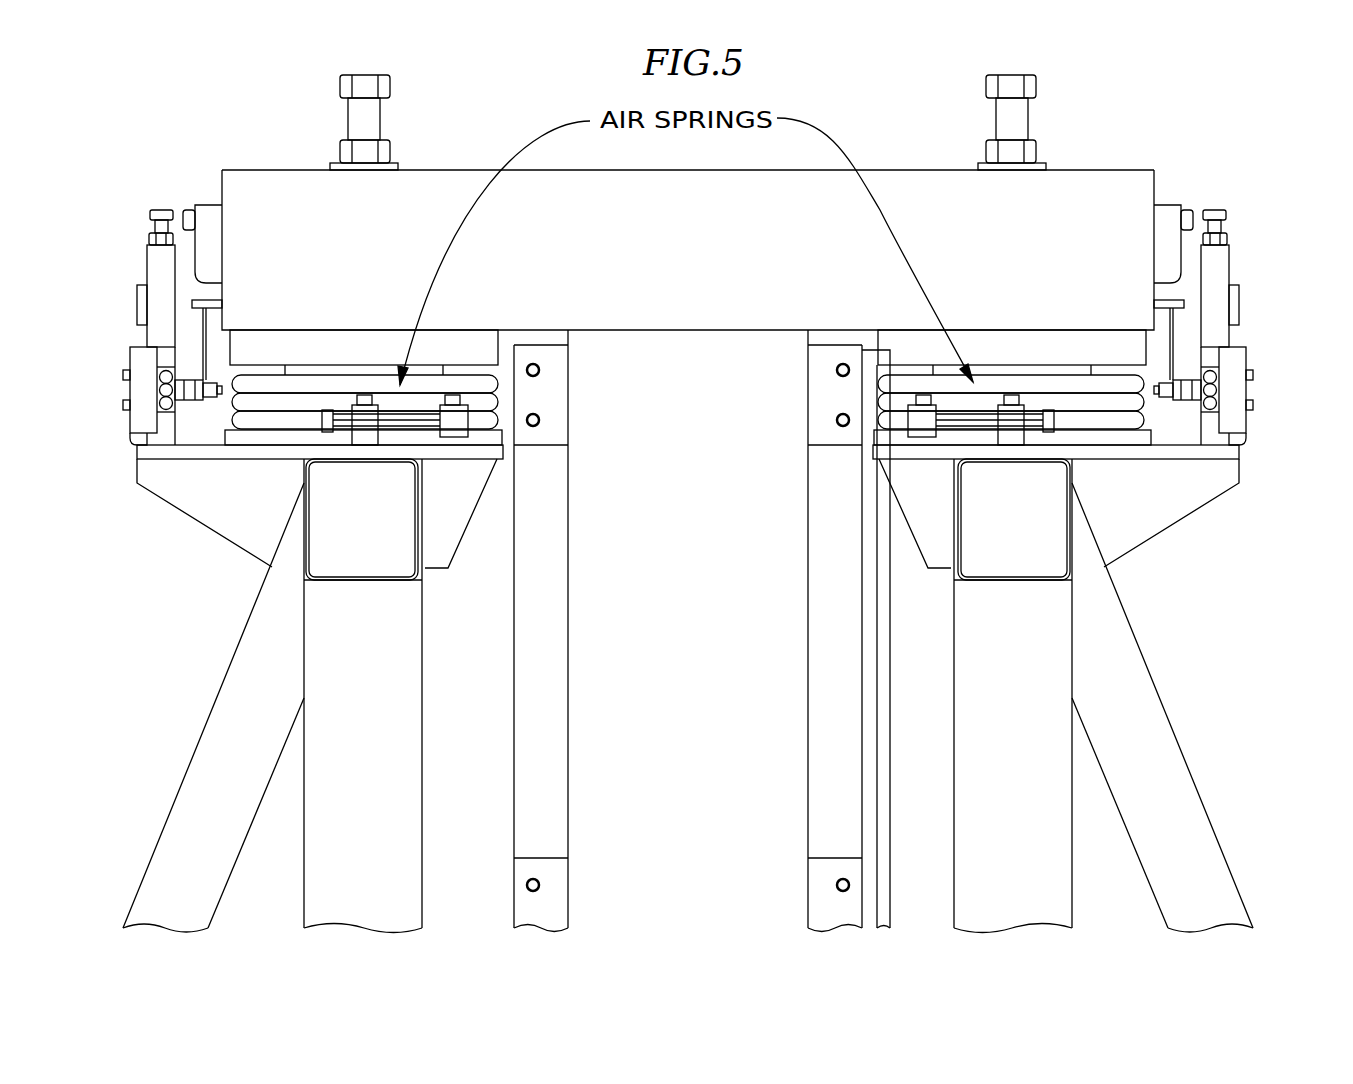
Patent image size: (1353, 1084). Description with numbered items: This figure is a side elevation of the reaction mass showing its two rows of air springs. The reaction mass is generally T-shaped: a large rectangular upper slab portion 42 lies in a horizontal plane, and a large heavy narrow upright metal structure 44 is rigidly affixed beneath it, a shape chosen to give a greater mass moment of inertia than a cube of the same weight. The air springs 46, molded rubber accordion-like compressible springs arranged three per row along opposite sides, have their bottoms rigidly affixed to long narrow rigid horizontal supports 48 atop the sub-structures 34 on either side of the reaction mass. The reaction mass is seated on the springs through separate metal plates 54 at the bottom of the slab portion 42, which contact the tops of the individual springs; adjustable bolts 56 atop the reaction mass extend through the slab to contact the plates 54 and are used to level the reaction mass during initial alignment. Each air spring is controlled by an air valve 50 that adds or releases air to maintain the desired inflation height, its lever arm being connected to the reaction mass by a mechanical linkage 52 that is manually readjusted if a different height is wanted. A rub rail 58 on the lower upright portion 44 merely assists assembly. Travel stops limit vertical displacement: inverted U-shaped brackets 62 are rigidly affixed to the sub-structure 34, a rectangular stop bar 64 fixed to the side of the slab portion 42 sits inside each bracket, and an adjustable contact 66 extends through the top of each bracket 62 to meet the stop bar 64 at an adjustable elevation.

The sub-structure 34 is at (1160, 732).
The upper slab portion 42 is at (897, 165).
The upright metal structure 44 is at (580, 714).
The air springs 46 is at (1072, 215).
The horizontal supports 48 is at (207, 453).
The air valve 50 is at (142, 392).
The mechanical linkage 52 is at (200, 352).
The metal plates 54 is at (478, 355).
The adjustable bolts 56 is at (358, 119).
The rub rail 58 is at (888, 744).
The inverted U-shaped brackets 62 is at (147, 262).
The stop bar 64 is at (137, 302).
The adjustable contact 66 is at (160, 226).